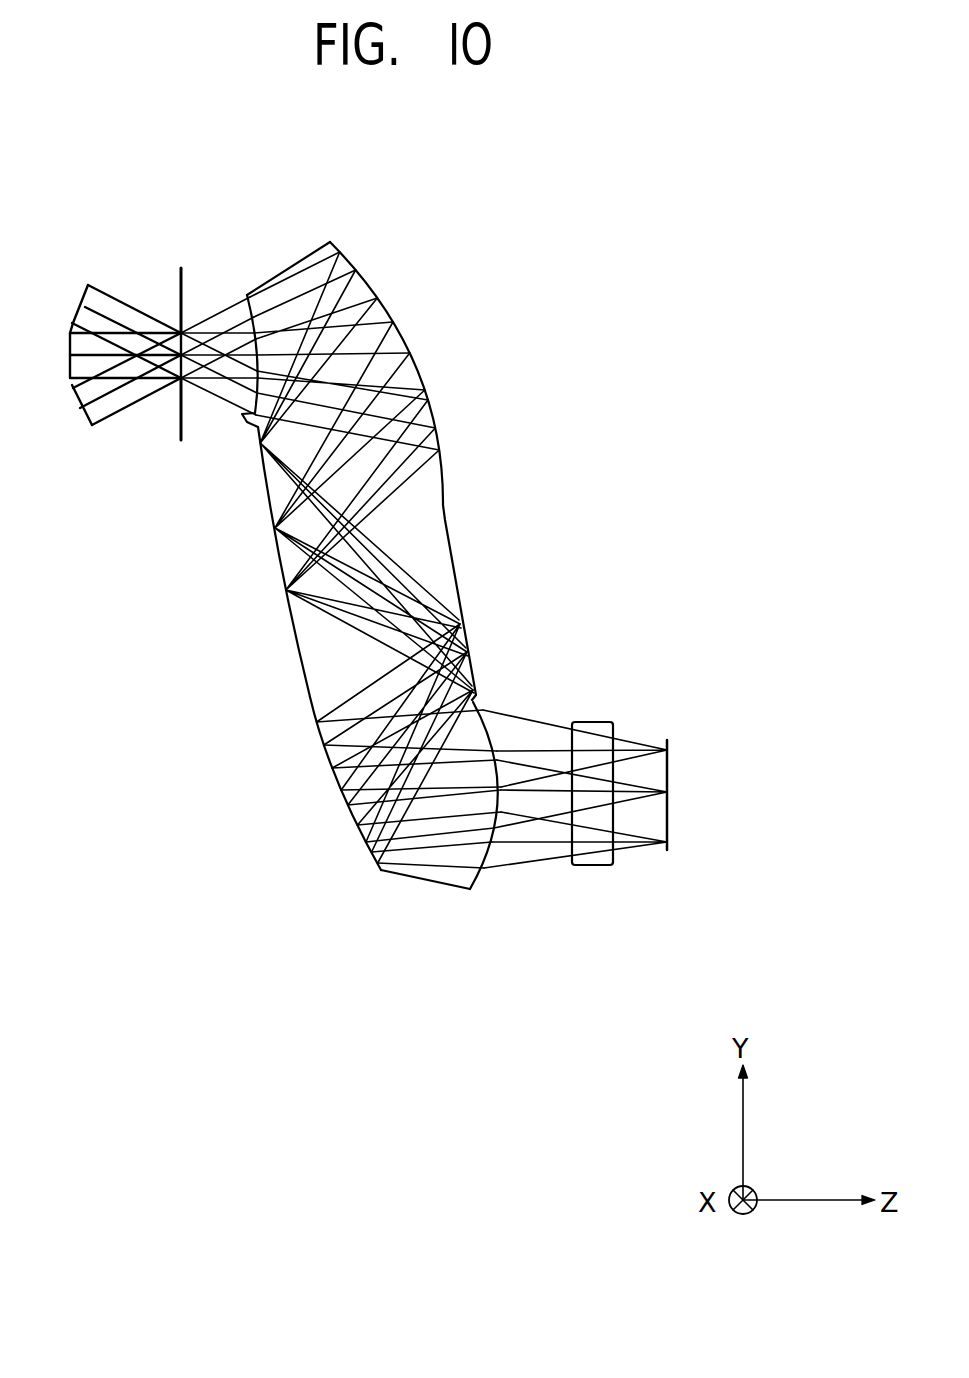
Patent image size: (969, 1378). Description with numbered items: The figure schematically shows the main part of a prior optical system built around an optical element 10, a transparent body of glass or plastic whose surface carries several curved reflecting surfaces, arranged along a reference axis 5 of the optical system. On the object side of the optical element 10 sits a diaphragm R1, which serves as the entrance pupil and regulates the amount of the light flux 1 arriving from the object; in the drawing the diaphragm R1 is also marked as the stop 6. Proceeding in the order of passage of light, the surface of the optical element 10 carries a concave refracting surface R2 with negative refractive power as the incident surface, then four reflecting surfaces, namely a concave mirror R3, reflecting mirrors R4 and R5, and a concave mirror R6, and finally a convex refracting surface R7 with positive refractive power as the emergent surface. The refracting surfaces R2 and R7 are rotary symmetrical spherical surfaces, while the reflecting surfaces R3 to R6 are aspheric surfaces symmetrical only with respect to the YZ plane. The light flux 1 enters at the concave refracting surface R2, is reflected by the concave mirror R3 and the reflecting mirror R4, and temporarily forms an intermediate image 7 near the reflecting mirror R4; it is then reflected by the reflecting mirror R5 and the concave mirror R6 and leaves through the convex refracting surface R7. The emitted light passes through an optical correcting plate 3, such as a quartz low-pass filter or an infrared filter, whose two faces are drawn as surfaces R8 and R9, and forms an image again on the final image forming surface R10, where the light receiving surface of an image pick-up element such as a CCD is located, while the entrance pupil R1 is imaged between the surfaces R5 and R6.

The light flux 1 is at (70, 332).
The reference axis 5 is at (84, 358).
The stop 6 is at (181, 311).
The intermediate image forming surface 7 is at (226, 562).
The optical element 10 is at (376, 565).
The optical correcting plate 3 is at (598, 787).
The diaphragm R1 is at (181, 284).
The concave refracting surface R2 is at (247, 296).
The concave mirror R3 is at (391, 318).
The reflecting mirror R4 is at (265, 490).
The reflecting mirror R5 is at (468, 641).
The concave mirror R6 is at (344, 802).
The convex refracting surface R7 is at (497, 860).
The lens entrance surface R8 is at (573, 740).
The lens exit surface R9 is at (614, 735).
The final image forming surface R10 is at (667, 740).